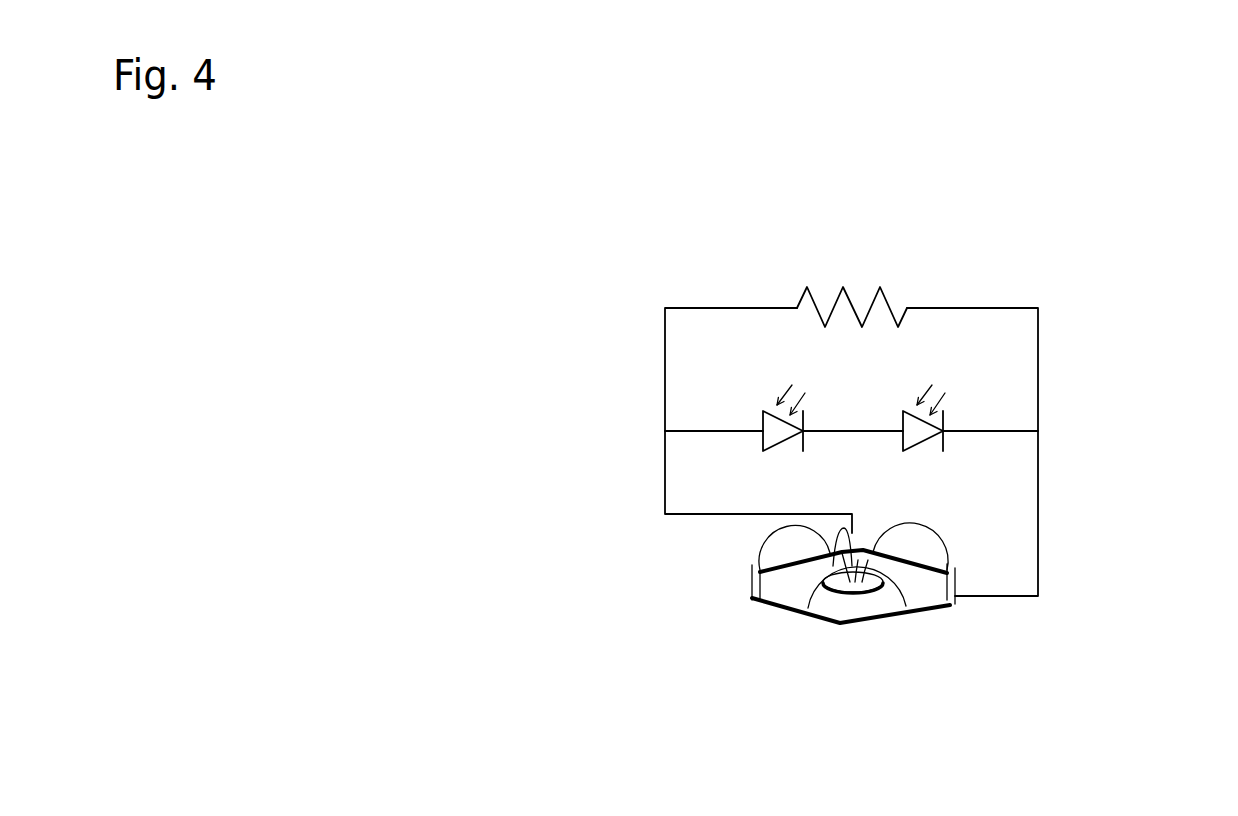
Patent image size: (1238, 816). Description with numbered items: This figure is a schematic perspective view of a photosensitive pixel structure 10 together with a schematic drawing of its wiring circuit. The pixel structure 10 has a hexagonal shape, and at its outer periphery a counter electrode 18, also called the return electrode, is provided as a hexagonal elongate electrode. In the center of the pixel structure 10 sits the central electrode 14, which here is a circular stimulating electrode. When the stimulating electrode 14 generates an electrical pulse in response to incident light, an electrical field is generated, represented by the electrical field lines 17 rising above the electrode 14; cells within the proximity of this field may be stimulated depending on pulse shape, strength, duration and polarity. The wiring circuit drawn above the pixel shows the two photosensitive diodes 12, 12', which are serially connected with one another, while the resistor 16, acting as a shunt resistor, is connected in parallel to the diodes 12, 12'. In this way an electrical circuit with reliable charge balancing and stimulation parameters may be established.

The photosensitive pixel structure 10 is at (782, 633).
The photosensitive diode 12 is at (1049, 384).
The second photosensitive diode 12' is at (684, 378).
The central electrode 14 is at (837, 582).
The resistor 16 is at (878, 287).
The electrical field lines 17 is at (903, 588).
The counter electrode 18 is at (937, 605).